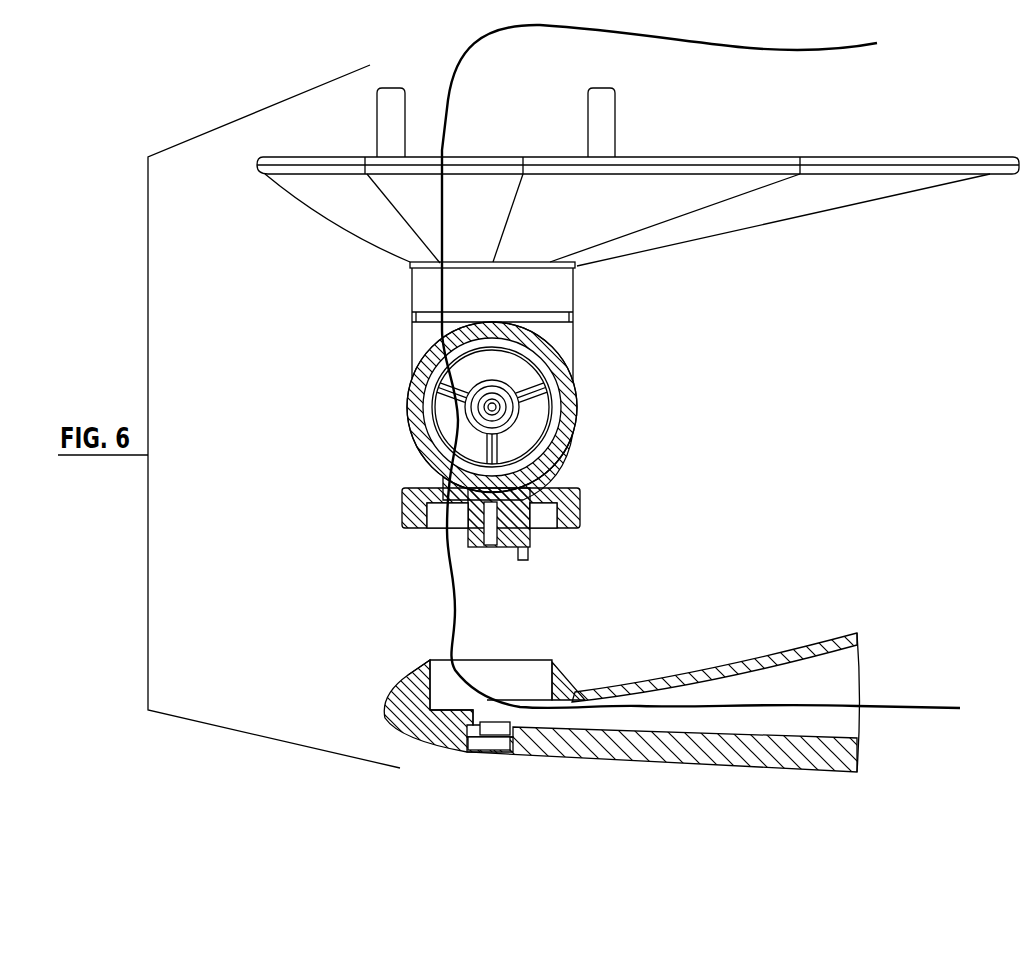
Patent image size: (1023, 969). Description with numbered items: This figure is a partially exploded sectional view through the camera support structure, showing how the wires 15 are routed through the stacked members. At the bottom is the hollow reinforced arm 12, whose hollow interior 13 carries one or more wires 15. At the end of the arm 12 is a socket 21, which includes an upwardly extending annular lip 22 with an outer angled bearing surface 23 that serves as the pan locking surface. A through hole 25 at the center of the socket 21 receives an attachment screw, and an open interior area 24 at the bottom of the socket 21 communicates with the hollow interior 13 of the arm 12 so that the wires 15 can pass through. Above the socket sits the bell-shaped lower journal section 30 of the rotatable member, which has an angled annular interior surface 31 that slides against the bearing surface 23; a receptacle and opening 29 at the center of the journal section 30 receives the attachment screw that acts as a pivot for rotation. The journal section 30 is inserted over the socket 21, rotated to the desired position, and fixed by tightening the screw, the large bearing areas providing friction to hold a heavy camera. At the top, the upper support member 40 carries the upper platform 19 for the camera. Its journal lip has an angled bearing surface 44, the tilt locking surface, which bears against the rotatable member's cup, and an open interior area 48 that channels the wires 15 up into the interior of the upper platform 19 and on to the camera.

The arm 12 is at (390, 700).
The hollow interior 13 is at (847, 723).
The wires 15 is at (450, 581).
The upper platform 19 is at (843, 192).
The socket 21 is at (513, 677).
The annular lip 22 is at (562, 678).
The angled bearing surface 23 is at (416, 666).
The open interior area 24 is at (503, 720).
The through hole 25 is at (483, 745).
The receptacle and opening 29 is at (492, 535).
The lower journal section 30 is at (570, 511).
The angled annular interior surface 31 is at (558, 527).
The upper support member 40 is at (557, 295).
The angled bearing surface 44 is at (405, 385).
The open interior area 48 is at (463, 448).